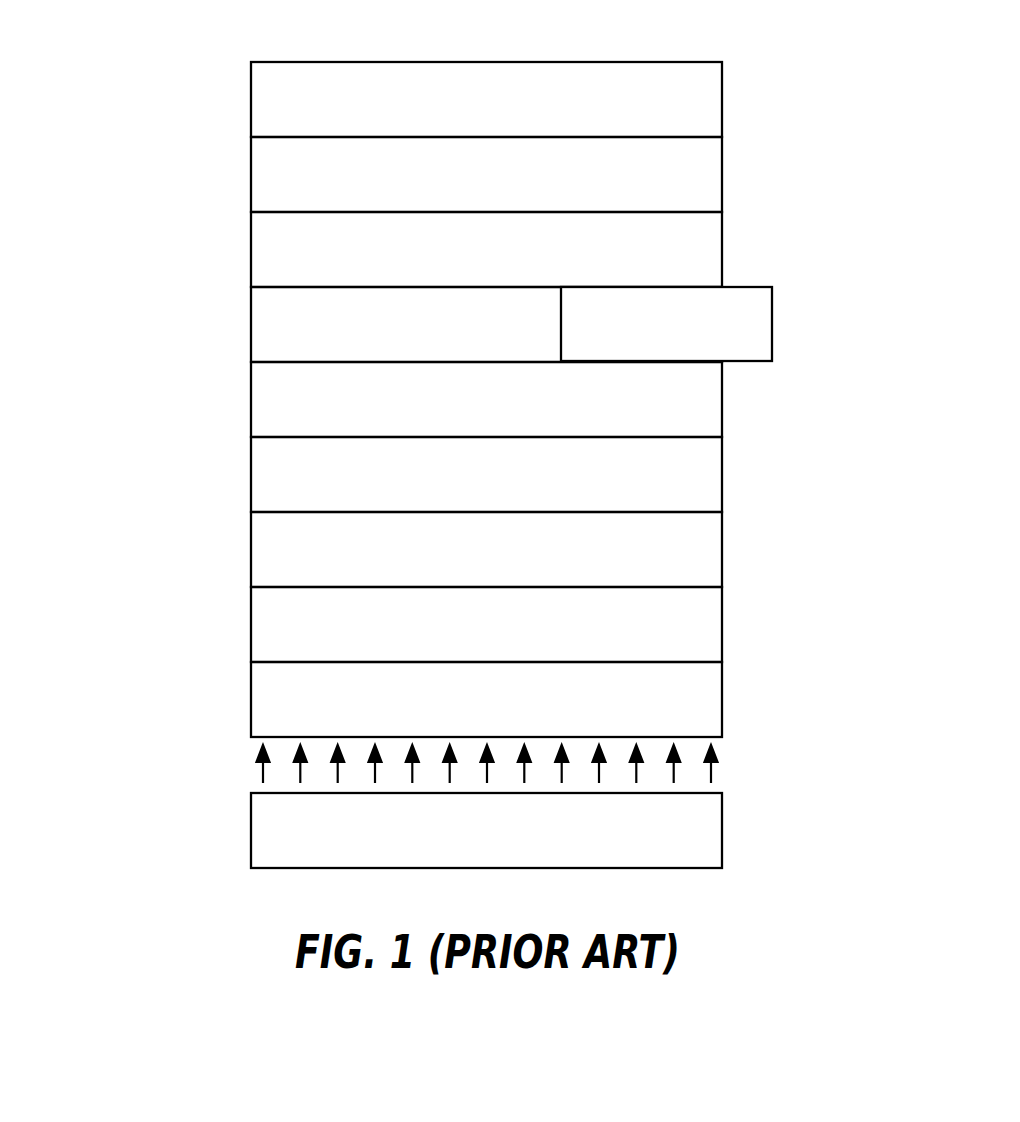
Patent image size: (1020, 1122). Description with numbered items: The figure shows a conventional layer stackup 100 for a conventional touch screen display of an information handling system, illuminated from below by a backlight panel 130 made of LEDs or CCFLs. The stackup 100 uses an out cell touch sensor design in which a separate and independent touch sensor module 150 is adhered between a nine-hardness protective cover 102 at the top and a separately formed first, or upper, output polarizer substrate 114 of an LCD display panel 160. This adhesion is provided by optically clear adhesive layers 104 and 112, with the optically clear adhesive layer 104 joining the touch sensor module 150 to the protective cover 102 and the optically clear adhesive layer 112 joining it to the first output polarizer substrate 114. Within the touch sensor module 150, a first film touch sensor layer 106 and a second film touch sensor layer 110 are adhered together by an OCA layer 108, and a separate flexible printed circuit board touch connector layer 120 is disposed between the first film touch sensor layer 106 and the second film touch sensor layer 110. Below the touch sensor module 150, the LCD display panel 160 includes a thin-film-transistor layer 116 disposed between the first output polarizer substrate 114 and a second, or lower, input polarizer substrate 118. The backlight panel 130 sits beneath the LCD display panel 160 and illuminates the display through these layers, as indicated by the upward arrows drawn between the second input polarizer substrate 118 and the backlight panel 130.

The layer stackup 100 is at (135, 61).
The protective cover 102 is at (251, 100).
The optically clear adhesive layer 104 is at (251, 175).
The first film touch sensor layer 106 is at (251, 250).
The OCA layer 108 is at (251, 325).
The second film touch sensor layer 110 is at (251, 400).
The optically clear adhesive layer 112 is at (251, 475).
The first output polarizer substrate 114 is at (251, 550).
The thin-film-transistor layer 116 is at (251, 625).
The second input polarizer substrate 118 is at (251, 700).
The flexible printed circuit board touch connector layer 120 is at (749, 287).
The backlight panel 130 is at (722, 835).
The touch sensor module 150 is at (793, 207).
The LCD display panel 160 is at (748, 507).